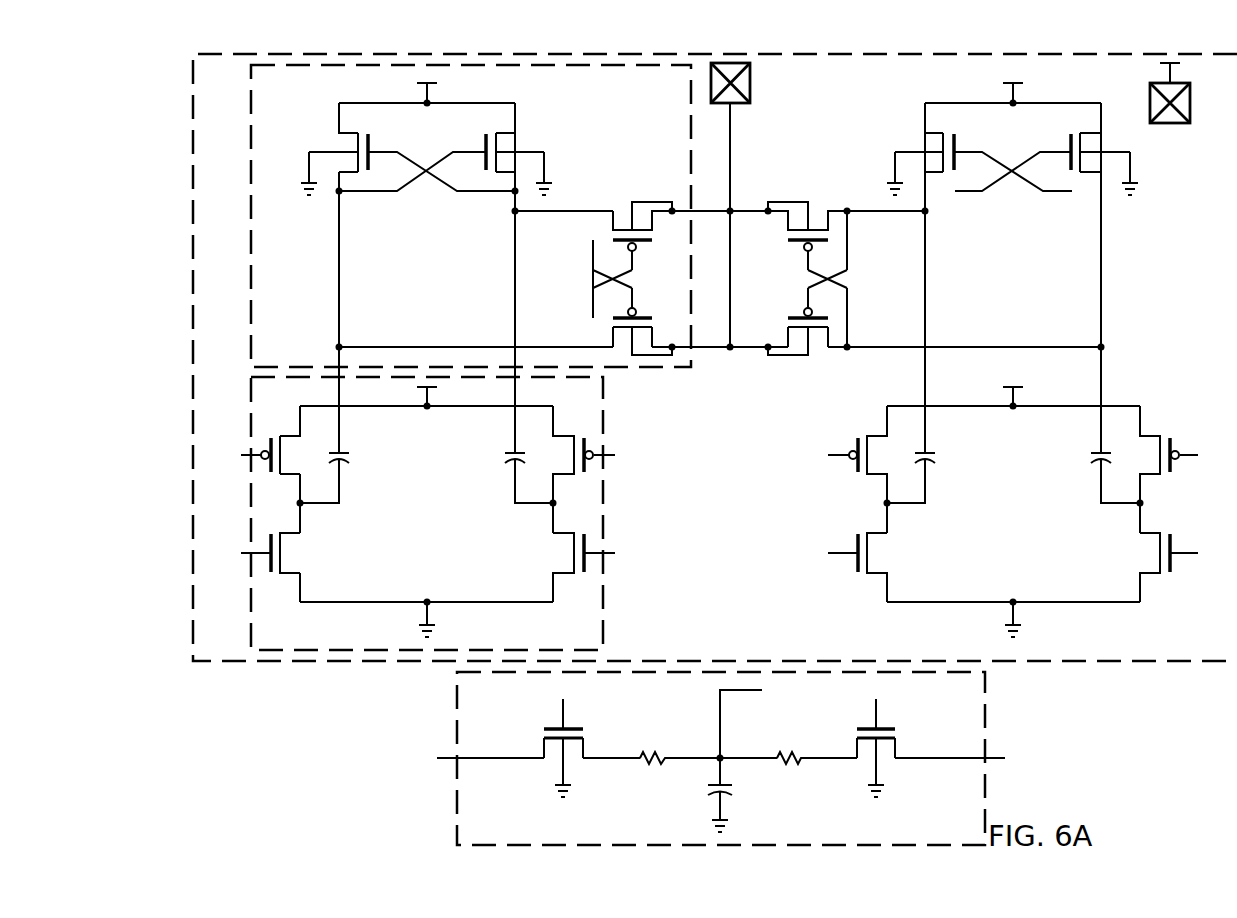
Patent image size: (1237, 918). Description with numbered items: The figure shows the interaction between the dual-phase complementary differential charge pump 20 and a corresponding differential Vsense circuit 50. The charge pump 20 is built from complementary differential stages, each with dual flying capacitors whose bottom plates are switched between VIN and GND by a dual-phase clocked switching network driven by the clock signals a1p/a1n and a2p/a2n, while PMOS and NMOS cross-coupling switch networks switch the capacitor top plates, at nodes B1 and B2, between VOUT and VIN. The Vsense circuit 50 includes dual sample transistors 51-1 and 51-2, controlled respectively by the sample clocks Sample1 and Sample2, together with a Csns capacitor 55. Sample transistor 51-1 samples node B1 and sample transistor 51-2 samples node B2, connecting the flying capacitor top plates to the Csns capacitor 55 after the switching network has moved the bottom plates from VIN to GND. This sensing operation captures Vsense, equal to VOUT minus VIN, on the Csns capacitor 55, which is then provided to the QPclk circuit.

The charge pump 20 is at (186, 240).
The Vsense circuit 50 is at (450, 791).
The sample transistor 51-1 is at (556, 727).
The sample transistor 51-2 is at (885, 727).
The Csns capacitor 55 is at (712, 790).